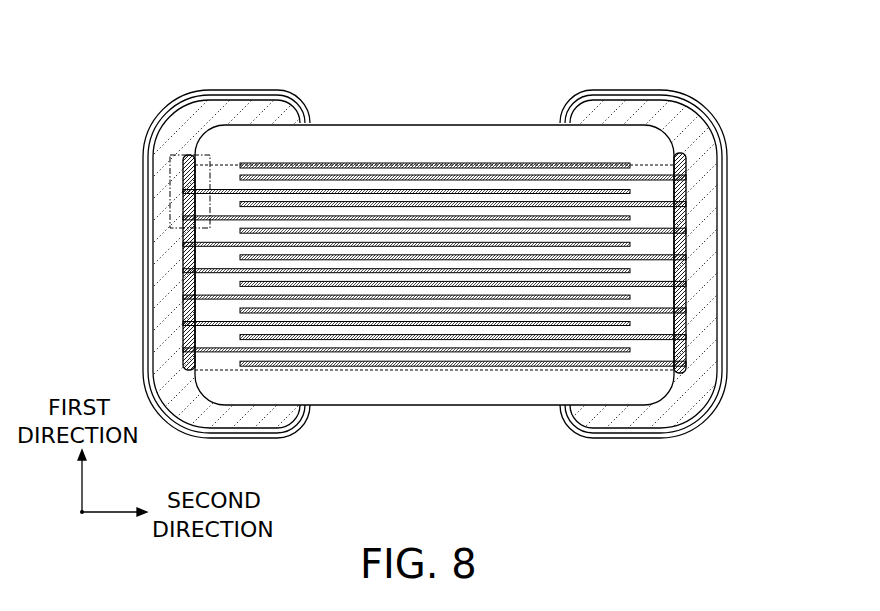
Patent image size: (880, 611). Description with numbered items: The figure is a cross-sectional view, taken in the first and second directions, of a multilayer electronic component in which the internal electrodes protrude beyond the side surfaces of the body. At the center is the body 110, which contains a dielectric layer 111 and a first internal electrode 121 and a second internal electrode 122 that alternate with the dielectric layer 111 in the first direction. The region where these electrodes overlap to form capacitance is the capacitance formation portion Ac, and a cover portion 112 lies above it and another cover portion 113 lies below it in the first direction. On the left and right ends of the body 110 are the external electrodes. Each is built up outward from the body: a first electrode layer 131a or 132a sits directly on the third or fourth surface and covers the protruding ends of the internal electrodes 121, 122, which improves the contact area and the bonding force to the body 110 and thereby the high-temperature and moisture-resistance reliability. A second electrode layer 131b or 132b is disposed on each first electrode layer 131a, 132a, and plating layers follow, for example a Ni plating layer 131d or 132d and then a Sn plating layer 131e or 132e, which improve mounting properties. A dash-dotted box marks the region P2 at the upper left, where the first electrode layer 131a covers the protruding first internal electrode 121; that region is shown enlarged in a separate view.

The body 110 is at (377, 125).
The dielectric layer 111 is at (318, 192).
The cover portion 112 is at (435, 138).
The cover portion 113 is at (440, 390).
The first internal electrode 121 is at (482, 165).
The second internal electrode 122 is at (557, 178).
The first electrode layer 131a is at (196, 262).
The second electrode layer 131b is at (160, 293).
The Ni plating layer 131d is at (147, 327).
The Sn plating layer 131e is at (148, 357).
The first electrode layer 132a is at (686, 262).
The second electrode layer 132b is at (710, 290).
The Ni plating layer 132d is at (715, 325).
The Sn plating layer 132e is at (722, 357).
The capacitance formation portion Ac is at (528, 372).
The region P2 is at (170, 193).